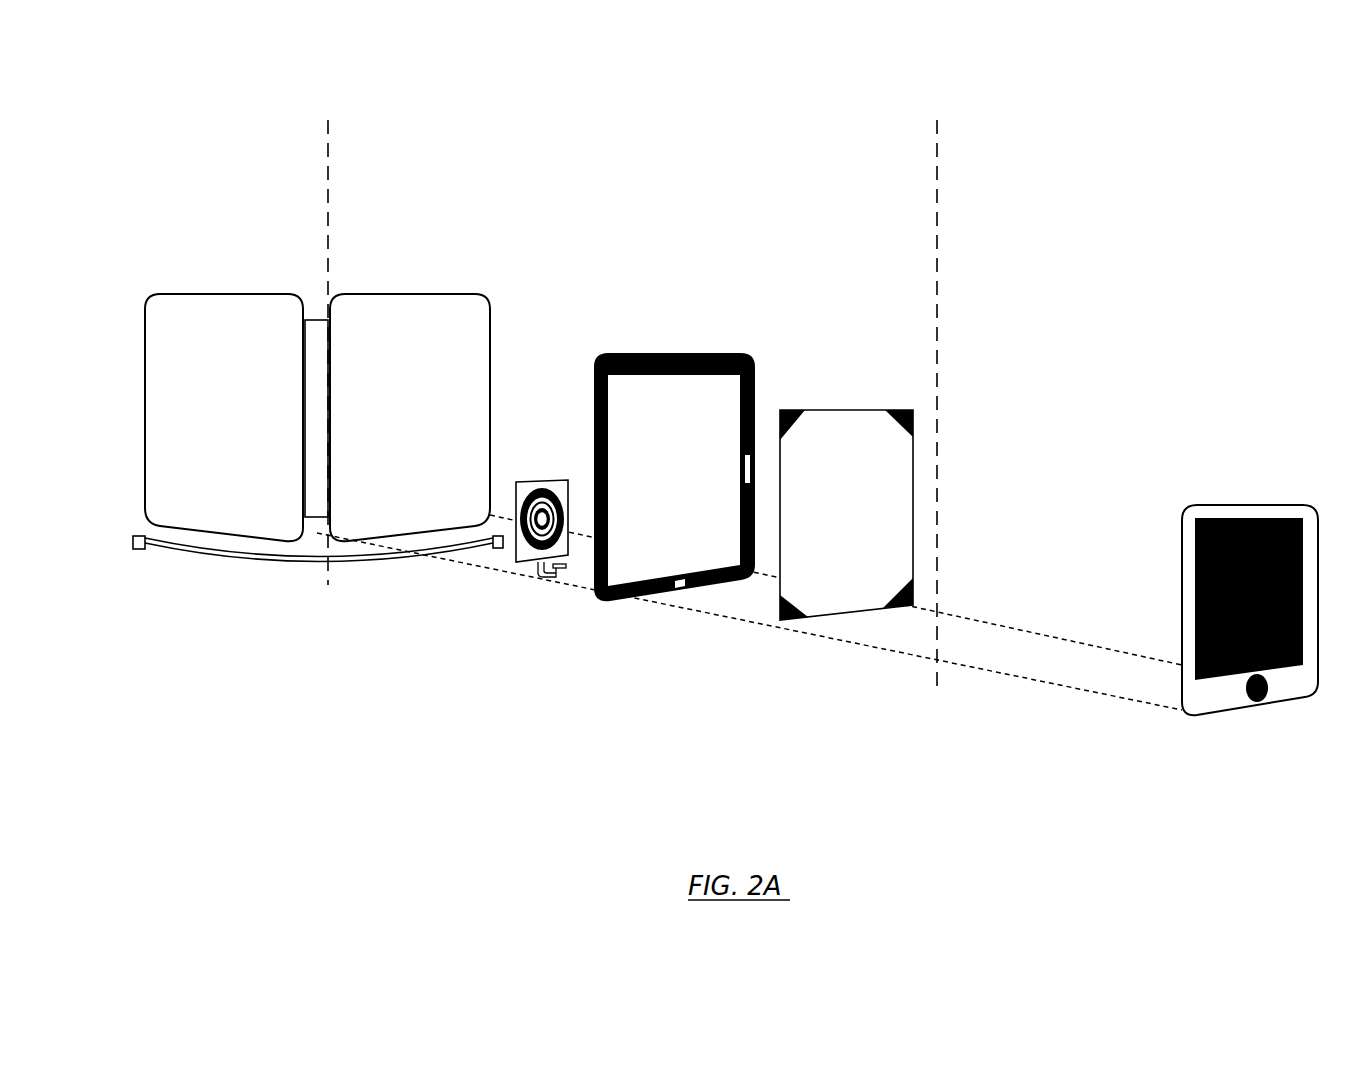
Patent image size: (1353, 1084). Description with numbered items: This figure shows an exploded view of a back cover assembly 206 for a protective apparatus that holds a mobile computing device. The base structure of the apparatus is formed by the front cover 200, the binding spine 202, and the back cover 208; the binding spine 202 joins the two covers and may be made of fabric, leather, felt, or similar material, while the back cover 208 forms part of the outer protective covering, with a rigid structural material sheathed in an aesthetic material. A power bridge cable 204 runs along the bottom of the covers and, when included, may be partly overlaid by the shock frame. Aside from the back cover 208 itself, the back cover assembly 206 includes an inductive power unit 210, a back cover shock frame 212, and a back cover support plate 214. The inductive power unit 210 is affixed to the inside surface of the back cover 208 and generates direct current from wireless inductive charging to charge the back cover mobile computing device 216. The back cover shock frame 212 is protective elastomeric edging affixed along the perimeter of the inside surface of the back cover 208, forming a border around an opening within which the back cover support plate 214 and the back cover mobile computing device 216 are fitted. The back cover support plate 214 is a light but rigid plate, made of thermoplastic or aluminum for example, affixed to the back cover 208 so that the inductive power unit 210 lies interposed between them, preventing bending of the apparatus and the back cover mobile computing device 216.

The front cover 200 is at (170, 292).
The binding spine 202 is at (310, 317).
The power bridge cable 204 is at (282, 564).
The back cover assembly 206 is at (927, 132).
The back cover 208 is at (408, 292).
The inductive power unit (IPU) 210 is at (529, 566).
The back cover shock frame 212 is at (677, 351).
The back cover support plate 214 is at (848, 619).
The back cover mobile computing device 216 is at (1242, 503).